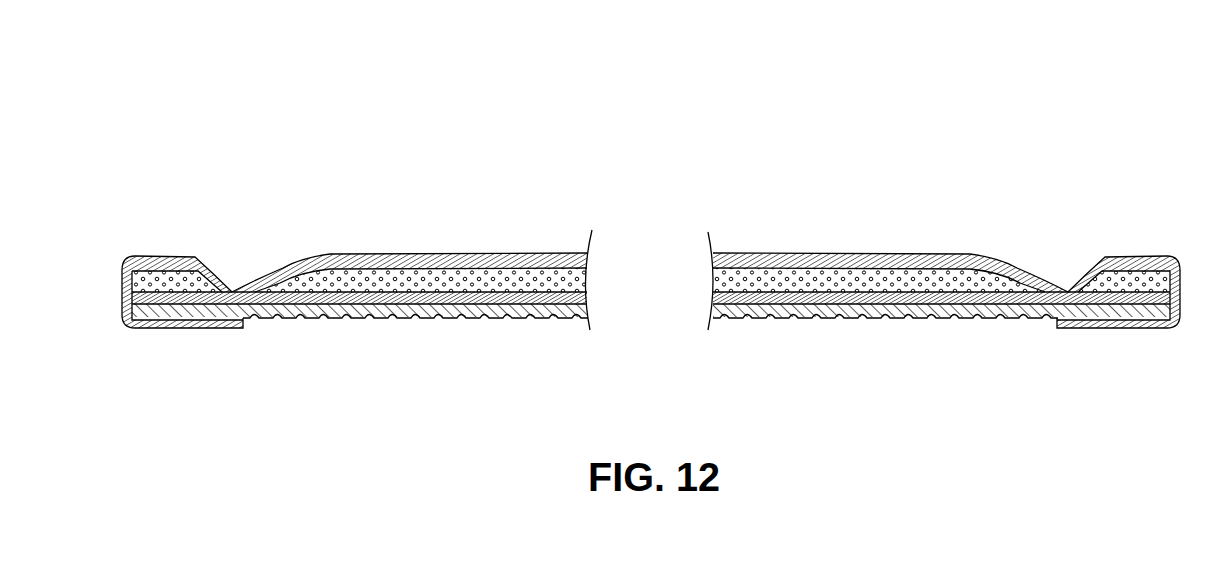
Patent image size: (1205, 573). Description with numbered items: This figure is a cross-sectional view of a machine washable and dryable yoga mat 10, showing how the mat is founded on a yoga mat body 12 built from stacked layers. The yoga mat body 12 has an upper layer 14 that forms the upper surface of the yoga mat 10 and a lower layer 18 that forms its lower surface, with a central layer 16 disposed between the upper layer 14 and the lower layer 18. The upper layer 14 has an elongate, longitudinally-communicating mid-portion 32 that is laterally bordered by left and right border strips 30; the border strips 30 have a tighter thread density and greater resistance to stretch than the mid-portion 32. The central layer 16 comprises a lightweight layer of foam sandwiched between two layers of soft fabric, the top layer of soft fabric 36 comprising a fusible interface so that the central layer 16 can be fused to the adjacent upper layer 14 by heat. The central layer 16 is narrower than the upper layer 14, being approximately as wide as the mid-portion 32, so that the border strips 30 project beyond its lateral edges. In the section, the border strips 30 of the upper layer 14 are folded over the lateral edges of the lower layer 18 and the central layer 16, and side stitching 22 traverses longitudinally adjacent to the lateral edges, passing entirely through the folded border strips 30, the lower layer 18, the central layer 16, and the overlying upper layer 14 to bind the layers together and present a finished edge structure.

The machine washable and dryable yoga mat 10 is at (787, 160).
The yoga mat body 12 is at (445, 253).
The upper layer 14 is at (344, 253).
The central layer 16 is at (588, 275).
The lower layer 18 is at (375, 320).
The side stitching 22 is at (1071, 325).
The border strips 30 is at (1120, 325).
The mid-portion 32 is at (978, 258).
The top layer of soft fabric 36 is at (850, 258).